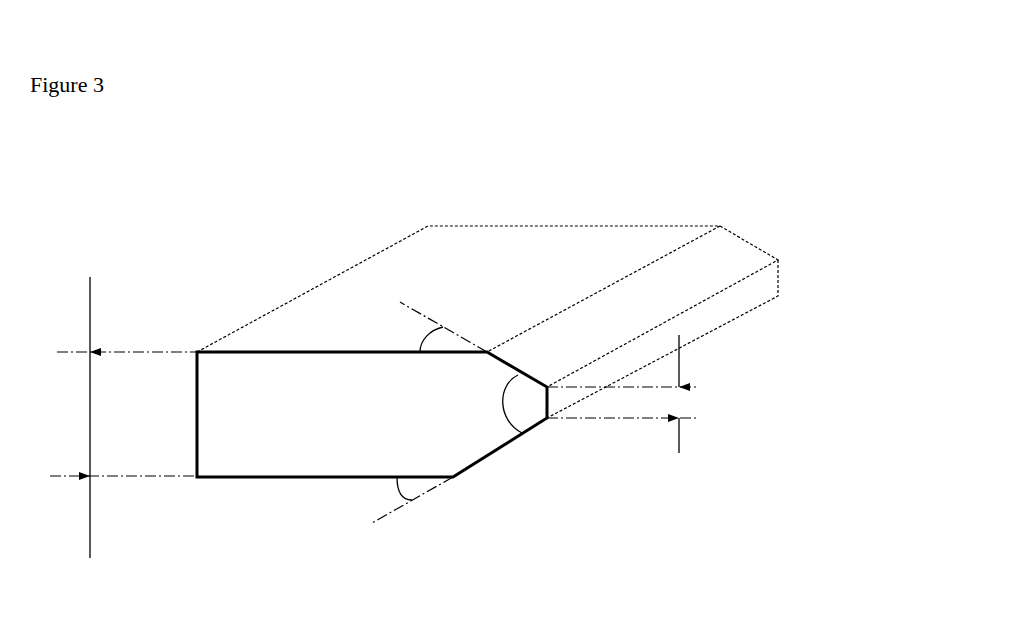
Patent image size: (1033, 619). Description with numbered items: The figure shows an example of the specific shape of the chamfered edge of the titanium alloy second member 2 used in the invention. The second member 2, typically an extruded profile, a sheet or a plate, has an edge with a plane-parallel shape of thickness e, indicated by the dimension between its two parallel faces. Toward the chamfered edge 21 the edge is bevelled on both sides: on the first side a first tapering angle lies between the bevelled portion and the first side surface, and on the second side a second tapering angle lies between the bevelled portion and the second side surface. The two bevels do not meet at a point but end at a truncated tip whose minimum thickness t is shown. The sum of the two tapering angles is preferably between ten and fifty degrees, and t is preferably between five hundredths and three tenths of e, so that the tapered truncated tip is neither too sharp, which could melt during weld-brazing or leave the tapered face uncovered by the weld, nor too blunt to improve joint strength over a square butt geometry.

The plate 2 is at (263, 393).
The bevelled edge 21 is at (712, 270).
The edge thickness e is at (117, 417).
The minimum thickness t is at (634, 394).